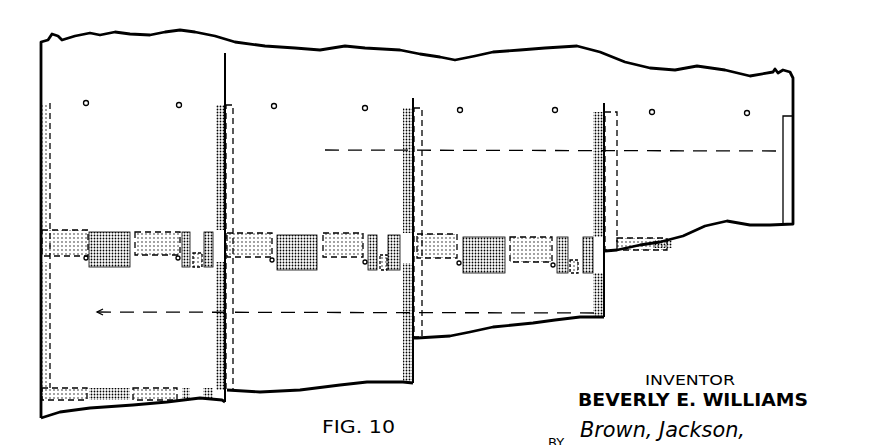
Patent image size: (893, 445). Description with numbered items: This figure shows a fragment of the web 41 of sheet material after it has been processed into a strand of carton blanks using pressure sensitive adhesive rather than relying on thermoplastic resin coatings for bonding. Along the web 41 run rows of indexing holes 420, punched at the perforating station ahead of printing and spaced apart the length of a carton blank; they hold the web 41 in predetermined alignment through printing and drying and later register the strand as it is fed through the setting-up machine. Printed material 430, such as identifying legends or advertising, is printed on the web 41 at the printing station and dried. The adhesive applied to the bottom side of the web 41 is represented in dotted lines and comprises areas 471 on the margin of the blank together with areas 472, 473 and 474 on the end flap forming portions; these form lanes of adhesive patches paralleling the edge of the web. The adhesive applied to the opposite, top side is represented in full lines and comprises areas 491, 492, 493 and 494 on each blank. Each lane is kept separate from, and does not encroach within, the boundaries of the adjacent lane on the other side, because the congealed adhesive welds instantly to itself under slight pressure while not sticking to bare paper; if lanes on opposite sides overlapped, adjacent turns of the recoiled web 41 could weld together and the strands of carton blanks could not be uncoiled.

The web 41 is at (417, 219).
The indexing holes 420 is at (177, 103).
The adhesive areas on margin 471 is at (46, 126).
The printed material 430 is at (138, 152).
The adhesive area 494 is at (215, 172).
The adhesive area on end flap forming portion 472 is at (59, 230).
The adhesive area on end flap forming portion 473 is at (155, 232).
The adhesive area on end flap forming portion 474 is at (196, 252).
The adhesive area 491 is at (103, 260).
The adhesive area 492 is at (185, 264).
The adhesive area 493 is at (207, 265).